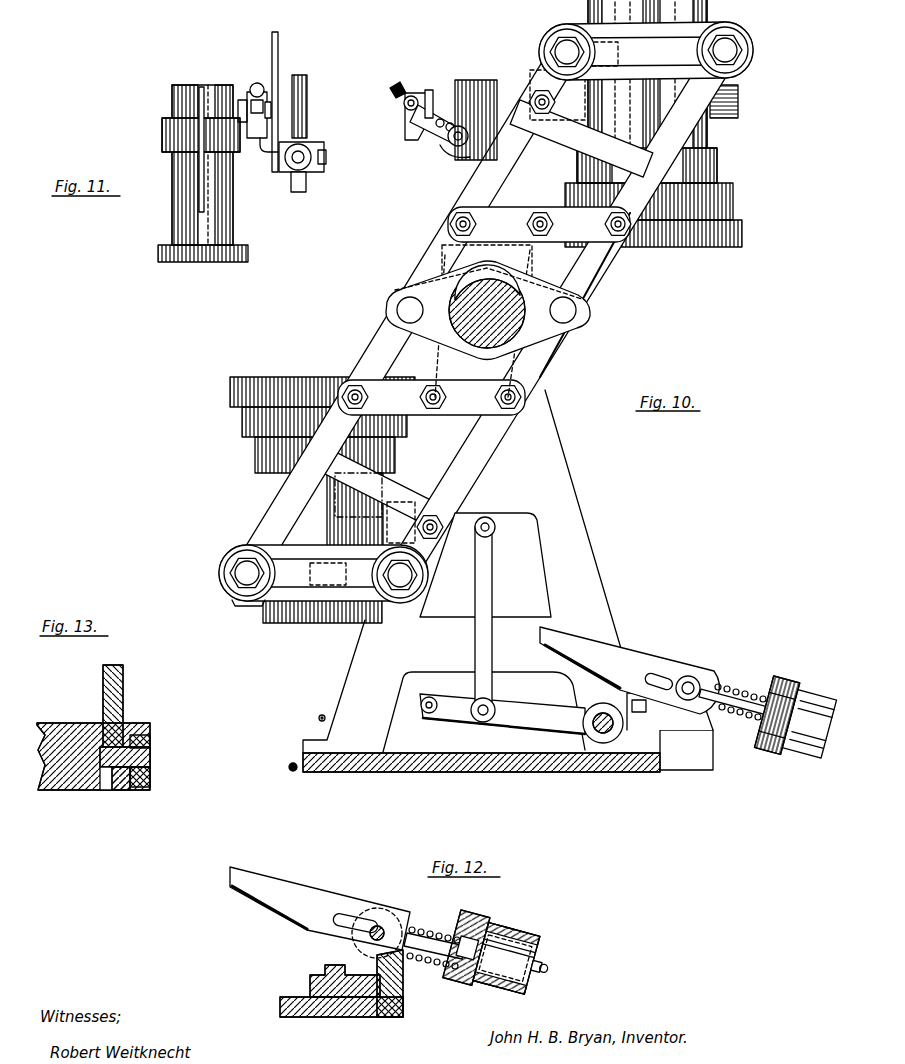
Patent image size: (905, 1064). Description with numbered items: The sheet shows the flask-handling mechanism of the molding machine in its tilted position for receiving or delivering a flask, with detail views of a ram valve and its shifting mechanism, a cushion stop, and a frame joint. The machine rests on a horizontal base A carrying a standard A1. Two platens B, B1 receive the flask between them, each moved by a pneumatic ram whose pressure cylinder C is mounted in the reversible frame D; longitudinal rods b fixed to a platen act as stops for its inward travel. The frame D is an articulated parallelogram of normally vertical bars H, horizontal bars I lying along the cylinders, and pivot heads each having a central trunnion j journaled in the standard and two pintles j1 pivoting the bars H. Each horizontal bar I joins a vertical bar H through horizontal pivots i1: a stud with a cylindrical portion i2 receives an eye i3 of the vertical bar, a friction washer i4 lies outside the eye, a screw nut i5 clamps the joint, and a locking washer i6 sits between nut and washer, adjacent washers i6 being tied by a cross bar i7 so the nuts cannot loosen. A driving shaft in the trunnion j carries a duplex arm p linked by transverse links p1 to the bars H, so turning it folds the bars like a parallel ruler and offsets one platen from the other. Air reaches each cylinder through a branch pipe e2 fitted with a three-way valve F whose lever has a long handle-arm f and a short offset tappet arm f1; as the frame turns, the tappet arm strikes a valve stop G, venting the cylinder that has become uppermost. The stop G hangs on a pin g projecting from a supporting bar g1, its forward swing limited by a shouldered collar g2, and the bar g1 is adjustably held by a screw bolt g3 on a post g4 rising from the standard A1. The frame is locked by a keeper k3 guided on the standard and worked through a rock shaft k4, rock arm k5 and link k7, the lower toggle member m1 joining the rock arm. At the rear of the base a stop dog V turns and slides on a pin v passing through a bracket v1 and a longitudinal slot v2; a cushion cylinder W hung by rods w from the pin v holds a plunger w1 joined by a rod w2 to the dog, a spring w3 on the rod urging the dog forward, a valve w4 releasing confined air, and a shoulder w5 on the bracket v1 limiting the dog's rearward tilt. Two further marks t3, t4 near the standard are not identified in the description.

In FIG. 10, the horizontal base A is at (395, 794).
In FIG. 12, the horizontal base A is at (282, 1010).
In FIG. 10, the standard A1 is at (438, 633).
In FIG. 10, the platen B is at (762, 258).
In FIG. 10, the platen B1 is at (230, 364).
In FIG. 10, the pressure cylinder C is at (322, 605).
In FIG. 10, the reversible frame D is at (585, 432).
In FIG. 10, the vertical bar H is at (486, 312).
In FIG. 13, the vertical bar H is at (119, 706).
In FIG. 10, the horizontal bar I is at (556, 20).
In FIG. 13, the horizontal bar I is at (56, 718).
In FIG. 10, the horizontal pivot i1 is at (486, 312).
In FIG. 13, the horizontal pivot i1 is at (150, 760).
In FIG. 13, the cylindrical portion of stud i2 is at (106, 792).
In FIG. 10, the eye of vertical bar i3 is at (548, 48).
In FIG. 13, the eye of vertical bar i3 is at (118, 792).
In FIG. 13, the friction washer i4 is at (130, 792).
In FIG. 10, the screw nut i5 is at (545, 58).
In FIG. 13, the screw nut i5 is at (152, 780).
In FIG. 10, the locking washer i6 is at (235, 600).
In FIG. 13, the locking washer i6 is at (142, 736).
In FIG. 10, the cross bar i7 is at (459, 313).
In FIG. 10, the longitudinal rod b is at (648, 90).
In FIG. 10, the duplex arm p is at (532, 262).
In FIG. 10, the transverse link p1 is at (484, 311).
In FIG. 10, the trunnion j is at (460, 312).
In FIG. 10, the pintle j1 is at (398, 312).
In FIG. 10, the pivot pin g is at (412, 96).
In FIG. 11, the pivot pin g is at (252, 90).
In FIG. 10, the supporting bar g1 is at (438, 138).
In FIG. 11, the supporting bar g1 is at (238, 100).
In FIG. 10, the shouldered collar g2 is at (428, 96).
In FIG. 11, the shouldered collar g2 is at (268, 106).
In FIG. 10, the screw bolt g3 is at (452, 152).
In FIG. 10, the post g4 is at (480, 88).
In FIG. 11, the post g4 is at (199, 173).
In FIG. 10, the valve stop G is at (406, 134).
In FIG. 11, the valve stop G is at (255, 141).
In FIG. 11, the handle-arm f is at (278, 38).
In FIG. 11, the tappet arm f1 is at (262, 155).
In FIG. 11, the branch pipe e2 is at (308, 106).
In FIG. 11, the three-way valve F is at (330, 184).
In FIG. 10, the keeper k3 is at (496, 530).
In FIG. 10, the rock shaft k4 is at (603, 745).
In FIG. 10, the rock arm k5 is at (542, 708).
In FIG. 10, the link k7 is at (492, 580).
In FIG. 10, the lower toggle member m1 is at (428, 684).
In FIG. 10, the pin hole t3 is at (324, 706).
In FIG. 10, the pin t4 is at (286, 757).
In FIG. 10, the stop dog V is at (578, 660).
In FIG. 12, the stop dog V is at (262, 872).
In FIG. 10, the pin v is at (690, 686).
In FIG. 12, the pin v is at (380, 925).
In FIG. 10, the bracket v1 is at (670, 711).
In FIG. 12, the bracket v1 is at (312, 976).
In FIG. 10, the longitudinal slot v2 is at (655, 678).
In FIG. 12, the longitudinal slot v2 is at (348, 915).
In FIG. 10, the cushion cylinder W is at (800, 700).
In FIG. 12, the cushion cylinder W is at (505, 945).
In FIG. 10, the rod w is at (741, 716).
In FIG. 12, the plunger w1 is at (471, 985).
In FIG. 10, the rod w2 is at (740, 700).
In FIG. 12, the rod w2 is at (425, 938).
In FIG. 10, the spring w3 is at (765, 725).
In FIG. 12, the spring w3 is at (433, 968).
In FIG. 12, the valve w4 is at (545, 971).
In FIG. 12, the shoulder w5 is at (385, 1000).